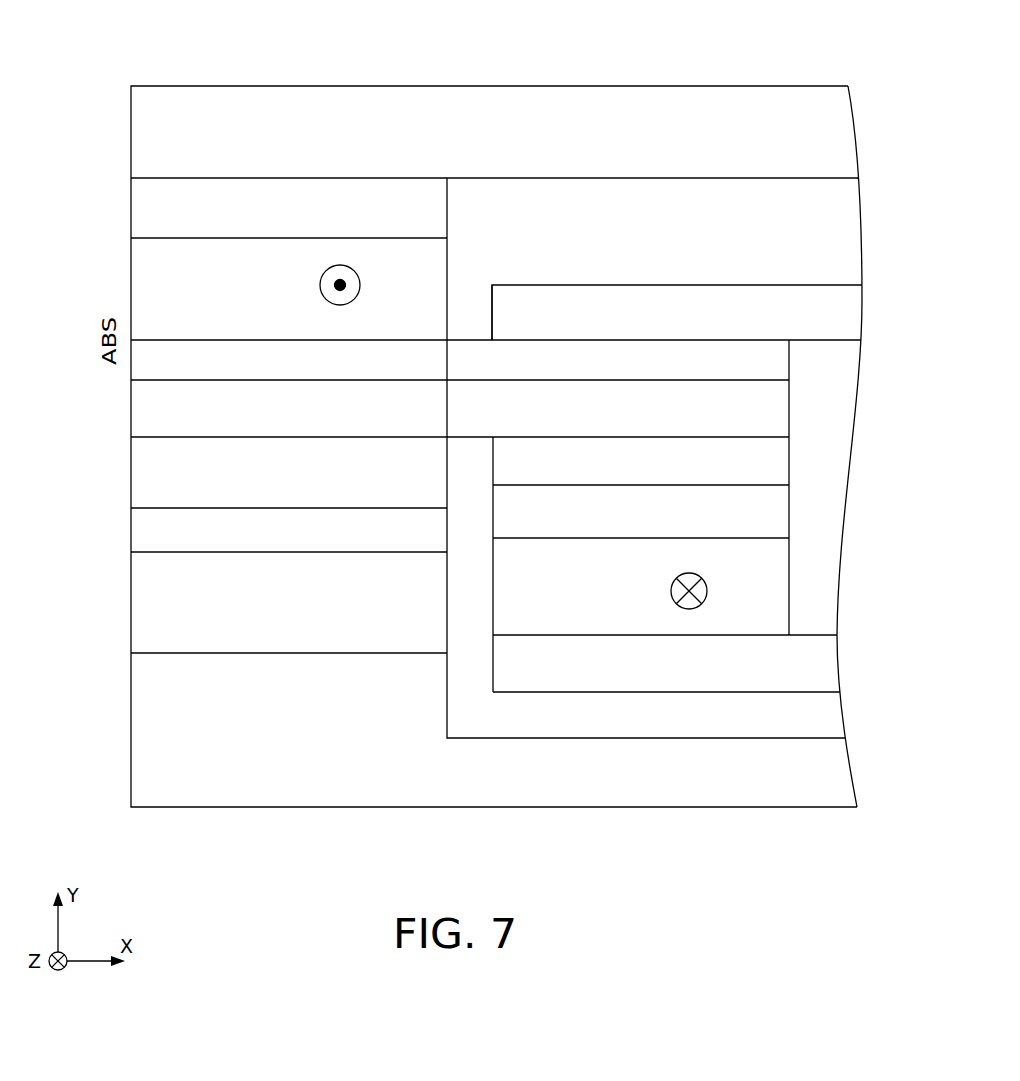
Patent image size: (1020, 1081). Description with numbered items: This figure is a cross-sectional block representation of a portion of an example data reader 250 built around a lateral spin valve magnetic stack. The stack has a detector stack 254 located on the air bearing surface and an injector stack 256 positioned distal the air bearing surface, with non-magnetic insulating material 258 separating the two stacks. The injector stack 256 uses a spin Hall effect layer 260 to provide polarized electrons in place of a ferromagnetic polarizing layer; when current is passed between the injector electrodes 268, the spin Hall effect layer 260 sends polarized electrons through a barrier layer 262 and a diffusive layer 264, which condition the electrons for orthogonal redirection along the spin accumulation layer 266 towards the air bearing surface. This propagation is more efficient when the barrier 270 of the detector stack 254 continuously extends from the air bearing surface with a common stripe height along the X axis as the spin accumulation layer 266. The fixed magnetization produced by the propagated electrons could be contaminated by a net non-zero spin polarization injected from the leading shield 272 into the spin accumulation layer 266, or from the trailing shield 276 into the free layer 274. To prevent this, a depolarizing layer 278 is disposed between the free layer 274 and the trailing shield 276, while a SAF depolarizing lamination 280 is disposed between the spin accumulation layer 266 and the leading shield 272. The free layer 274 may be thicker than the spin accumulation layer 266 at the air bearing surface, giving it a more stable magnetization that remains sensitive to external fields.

The data reader 250 is at (806, 50).
The detector stack 254 is at (141, 667).
The injector stack 256 is at (643, 274).
The non-magnetic insulating material 258 is at (837, 244).
The spin Hall effect layer 260 is at (785, 599).
The barrier layer 262 is at (785, 522).
The diffusive layer 264 is at (785, 472).
The spin accumulation layer 266 is at (785, 421).
The injector electrodes 268 is at (535, 324).
The barrier 270 is at (785, 371).
The leading shield 272 is at (837, 784).
The free layer 274 is at (442, 301).
The trailing shield 276 is at (837, 144).
The depolarizing layer 278 is at (442, 217).
The SAF depolarizing lamination 280 is at (126, 436).